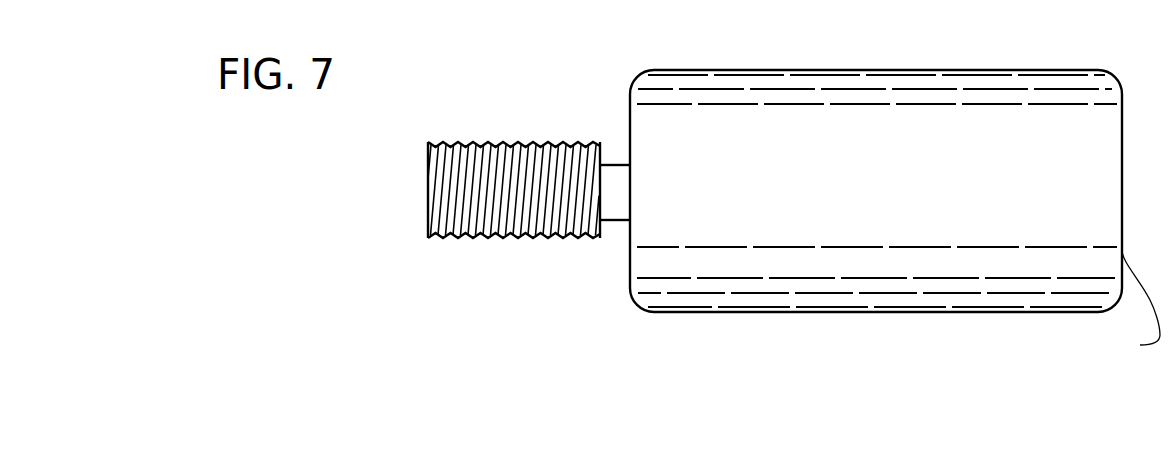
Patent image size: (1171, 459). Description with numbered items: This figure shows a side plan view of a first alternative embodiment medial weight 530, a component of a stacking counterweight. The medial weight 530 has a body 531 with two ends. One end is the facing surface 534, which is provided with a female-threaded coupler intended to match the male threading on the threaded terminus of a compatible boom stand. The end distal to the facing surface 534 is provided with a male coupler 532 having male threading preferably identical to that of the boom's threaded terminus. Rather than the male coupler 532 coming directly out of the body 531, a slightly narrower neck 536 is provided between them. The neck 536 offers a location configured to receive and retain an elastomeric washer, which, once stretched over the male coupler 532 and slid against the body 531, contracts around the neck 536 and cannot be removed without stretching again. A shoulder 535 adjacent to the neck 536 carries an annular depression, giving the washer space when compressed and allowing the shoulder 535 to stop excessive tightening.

The medial weight 530 is at (942, 188).
The body 531 is at (930, 96).
The male coupler 532 is at (533, 143).
The facing surface 534 is at (1126, 304).
The shoulder 535 is at (630, 112).
The neck 536 is at (607, 222).